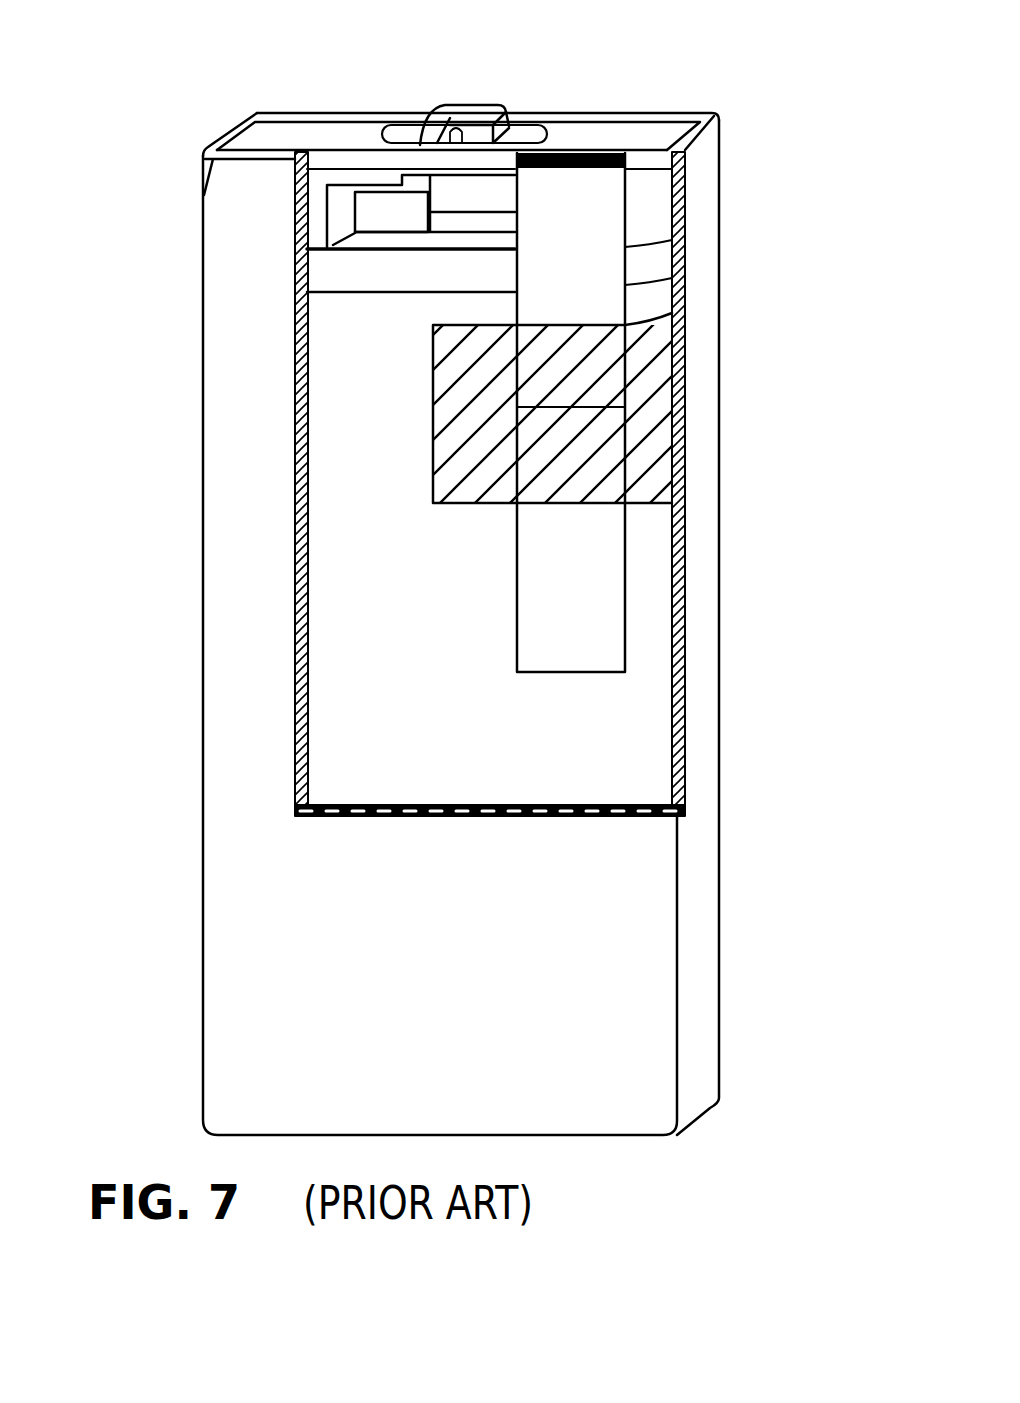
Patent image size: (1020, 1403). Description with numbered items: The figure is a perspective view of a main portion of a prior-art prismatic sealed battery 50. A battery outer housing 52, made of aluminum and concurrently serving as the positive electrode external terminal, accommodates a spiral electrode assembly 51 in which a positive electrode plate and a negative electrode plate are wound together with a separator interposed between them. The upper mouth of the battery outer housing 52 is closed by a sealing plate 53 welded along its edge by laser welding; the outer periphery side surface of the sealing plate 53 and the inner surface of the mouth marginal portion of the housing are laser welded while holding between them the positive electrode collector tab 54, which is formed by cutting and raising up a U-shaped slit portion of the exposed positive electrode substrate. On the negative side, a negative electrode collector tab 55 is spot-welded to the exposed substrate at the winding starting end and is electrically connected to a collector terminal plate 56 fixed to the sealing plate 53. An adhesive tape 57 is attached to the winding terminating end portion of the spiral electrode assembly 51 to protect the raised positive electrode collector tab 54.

The prismatic sealed battery 50 is at (157, 68).
The spiral electrode assembly 51 is at (396, 595).
The battery outer housing 52 is at (220, 887).
The sealing plate 53 is at (618, 135).
The positive electrode collector tab 54 is at (585, 238).
The negative electrode collector tab 55 is at (385, 210).
The collector terminal plate 56 is at (421, 180).
The adhesive tape 57 is at (648, 362).